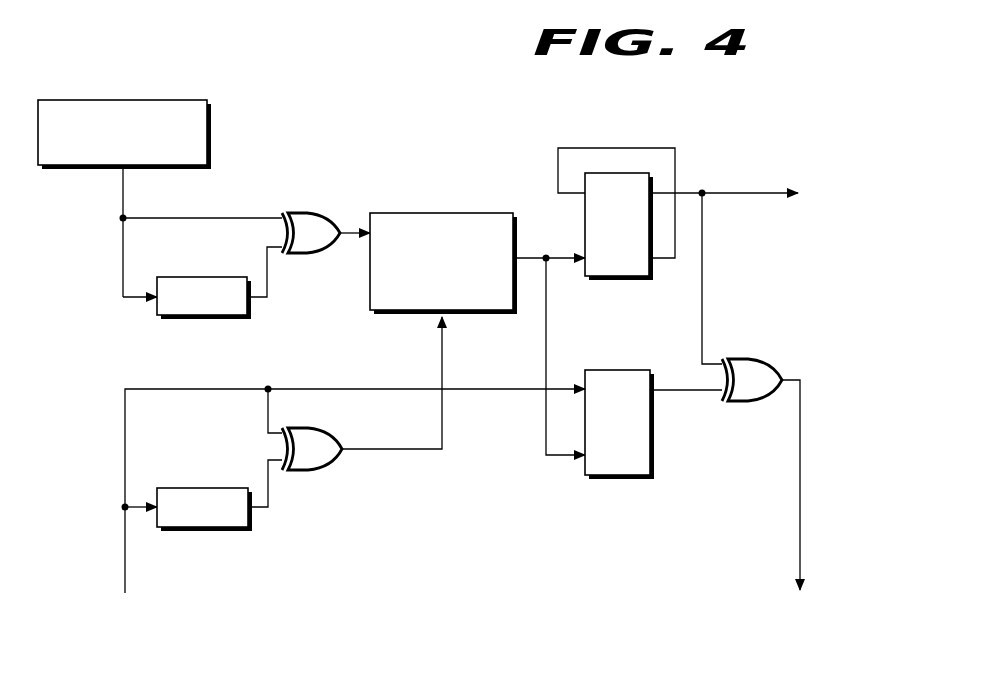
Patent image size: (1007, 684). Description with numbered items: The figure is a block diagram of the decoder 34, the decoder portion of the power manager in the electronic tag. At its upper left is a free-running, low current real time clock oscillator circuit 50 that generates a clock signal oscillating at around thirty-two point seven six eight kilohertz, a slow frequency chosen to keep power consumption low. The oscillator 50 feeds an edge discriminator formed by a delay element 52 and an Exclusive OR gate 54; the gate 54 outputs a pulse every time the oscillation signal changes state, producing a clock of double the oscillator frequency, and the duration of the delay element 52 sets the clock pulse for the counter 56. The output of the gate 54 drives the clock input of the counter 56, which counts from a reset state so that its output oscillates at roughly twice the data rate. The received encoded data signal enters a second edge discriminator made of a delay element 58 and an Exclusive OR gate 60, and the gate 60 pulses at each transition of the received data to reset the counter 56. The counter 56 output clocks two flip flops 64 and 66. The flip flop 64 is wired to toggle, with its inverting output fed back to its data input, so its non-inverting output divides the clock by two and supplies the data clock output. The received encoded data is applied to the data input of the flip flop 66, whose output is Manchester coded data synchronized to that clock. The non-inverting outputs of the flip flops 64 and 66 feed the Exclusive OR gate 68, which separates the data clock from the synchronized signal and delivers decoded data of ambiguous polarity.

The decoder 34 is at (450, 110).
The real time clock oscillator circuit 50 is at (96, 100).
The delay element 52 is at (191, 322).
The Exclusive OR gate 54 is at (302, 210).
The counter 56 is at (462, 212).
The delay element 58 is at (197, 487).
The Exclusive OR gate 60 is at (322, 473).
The flip flop 64 is at (626, 283).
The flip flop 66 is at (610, 481).
The Exclusive OR gate 68 is at (760, 356).